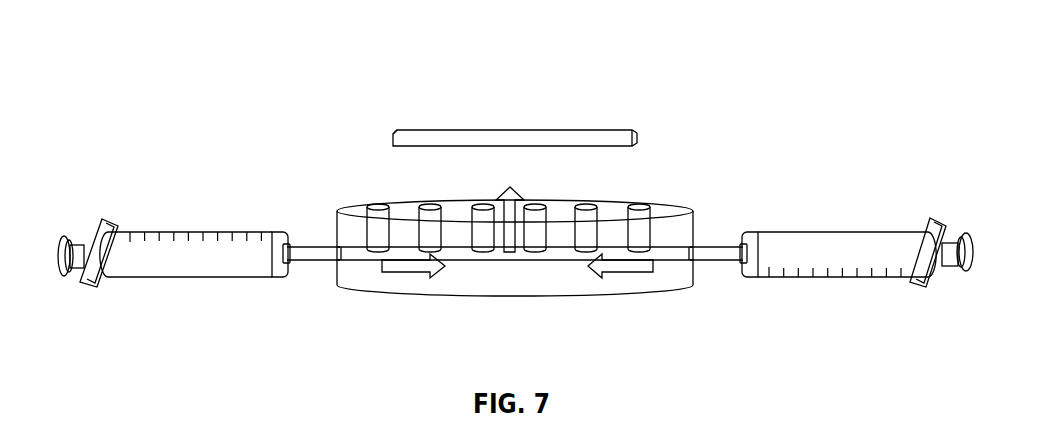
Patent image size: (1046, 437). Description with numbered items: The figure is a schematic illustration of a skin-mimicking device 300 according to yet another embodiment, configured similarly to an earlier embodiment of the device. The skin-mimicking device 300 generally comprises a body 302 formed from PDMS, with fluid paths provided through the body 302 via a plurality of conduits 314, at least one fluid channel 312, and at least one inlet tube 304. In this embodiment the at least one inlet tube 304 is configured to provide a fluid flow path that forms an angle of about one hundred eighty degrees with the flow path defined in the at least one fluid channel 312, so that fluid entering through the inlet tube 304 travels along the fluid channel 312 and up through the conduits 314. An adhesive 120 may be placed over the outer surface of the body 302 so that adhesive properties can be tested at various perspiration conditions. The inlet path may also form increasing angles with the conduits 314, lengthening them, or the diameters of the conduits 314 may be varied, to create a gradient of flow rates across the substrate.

The skin-mimicking device 300 is at (162, 54).
The adhesive 120 is at (540, 130).
The body 302 is at (367, 282).
The inlet tube 304 is at (712, 248).
The fluid channel 312 is at (668, 255).
The conduits 314 is at (577, 215).